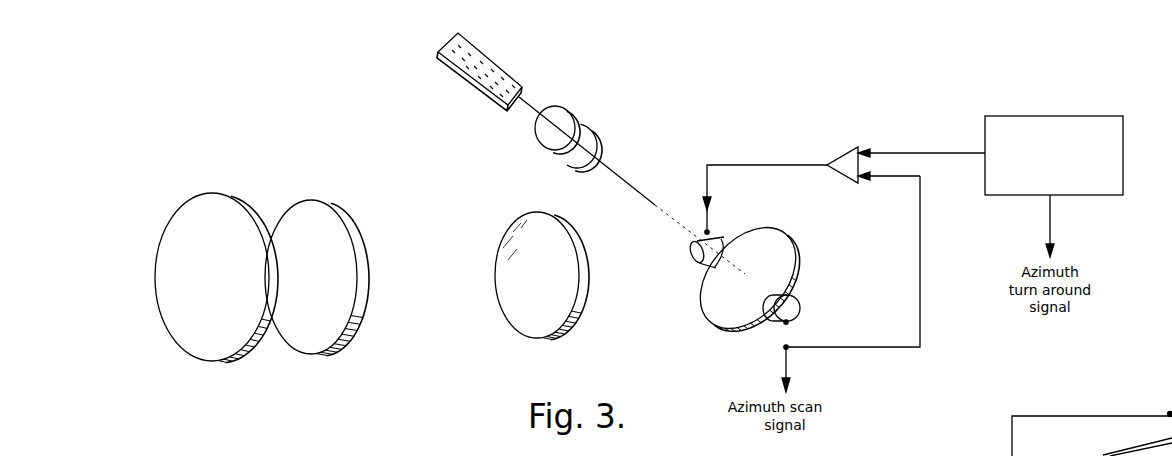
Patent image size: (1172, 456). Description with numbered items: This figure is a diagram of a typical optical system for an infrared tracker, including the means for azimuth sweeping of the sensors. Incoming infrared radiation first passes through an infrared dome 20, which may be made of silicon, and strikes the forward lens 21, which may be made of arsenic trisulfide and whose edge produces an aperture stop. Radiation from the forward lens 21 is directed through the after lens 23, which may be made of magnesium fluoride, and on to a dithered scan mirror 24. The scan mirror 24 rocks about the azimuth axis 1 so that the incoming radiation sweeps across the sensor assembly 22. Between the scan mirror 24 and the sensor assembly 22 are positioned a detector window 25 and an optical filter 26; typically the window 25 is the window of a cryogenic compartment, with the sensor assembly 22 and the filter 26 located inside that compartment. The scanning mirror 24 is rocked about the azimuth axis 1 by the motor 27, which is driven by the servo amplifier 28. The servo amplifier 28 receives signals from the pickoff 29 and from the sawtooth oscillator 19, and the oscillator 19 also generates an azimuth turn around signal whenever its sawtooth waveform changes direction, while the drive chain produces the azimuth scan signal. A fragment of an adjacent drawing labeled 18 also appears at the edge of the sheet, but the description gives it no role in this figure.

The azimuth axis 1 is at (865, 372).
The scanning mirror assembly 18 is at (1168, 412).
The sawtooth oscillator 19 is at (1117, 123).
The infrared dome 20 is at (224, 352).
The forward lens 21 is at (292, 205).
The sensor assembly 22 is at (493, 63).
The after lens 23 is at (552, 333).
The dithered scan mirror 24 is at (772, 228).
The detector window 25 is at (597, 127).
The optical filter 26 is at (563, 110).
The motor 27 is at (710, 233).
The servo amplifier 28 is at (857, 148).
The pickoff 29 is at (795, 296).